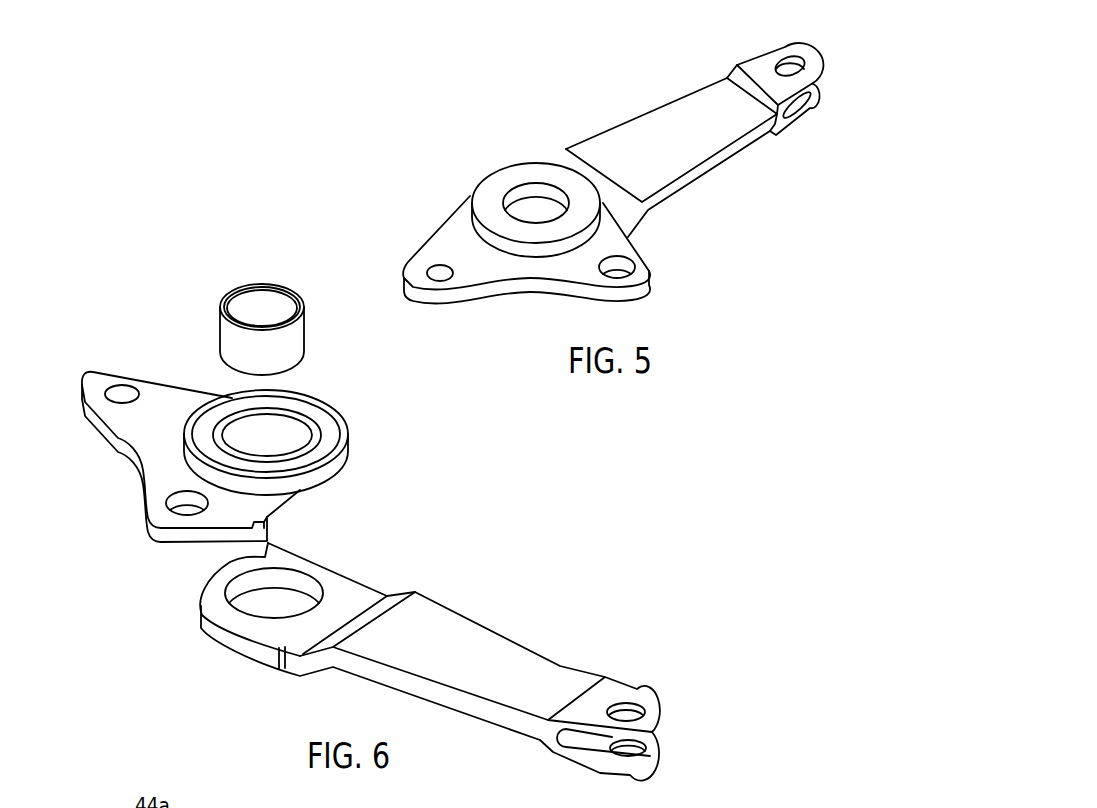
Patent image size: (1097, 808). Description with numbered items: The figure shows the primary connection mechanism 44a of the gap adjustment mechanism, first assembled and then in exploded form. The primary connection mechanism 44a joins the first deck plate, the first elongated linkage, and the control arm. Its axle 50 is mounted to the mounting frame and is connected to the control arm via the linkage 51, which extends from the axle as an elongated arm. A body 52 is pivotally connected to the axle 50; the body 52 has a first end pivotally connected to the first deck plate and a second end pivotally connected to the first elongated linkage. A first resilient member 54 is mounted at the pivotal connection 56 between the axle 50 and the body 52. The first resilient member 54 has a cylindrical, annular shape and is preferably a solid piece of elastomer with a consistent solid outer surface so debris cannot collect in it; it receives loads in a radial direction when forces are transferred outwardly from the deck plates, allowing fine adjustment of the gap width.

In FIG. 5, the primary connection mechanism 44a is at (590, 106).
In FIG. 6, the primary connection mechanism 44a is at (431, 503).
In FIG. 6, the axle 50 is at (288, 343).
In FIG. 5, the linkage 51 is at (697, 128).
In FIG. 6, the linkage 51 is at (506, 662).
In FIG. 5, the body 52 is at (453, 236).
In FIG. 6, the body 52 is at (148, 436).
In FIG. 6, the first resilient member 54 is at (327, 428).
In FIG. 6, the pivotal connection 56 is at (210, 371).